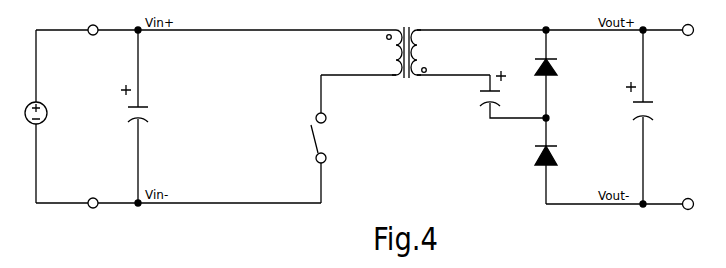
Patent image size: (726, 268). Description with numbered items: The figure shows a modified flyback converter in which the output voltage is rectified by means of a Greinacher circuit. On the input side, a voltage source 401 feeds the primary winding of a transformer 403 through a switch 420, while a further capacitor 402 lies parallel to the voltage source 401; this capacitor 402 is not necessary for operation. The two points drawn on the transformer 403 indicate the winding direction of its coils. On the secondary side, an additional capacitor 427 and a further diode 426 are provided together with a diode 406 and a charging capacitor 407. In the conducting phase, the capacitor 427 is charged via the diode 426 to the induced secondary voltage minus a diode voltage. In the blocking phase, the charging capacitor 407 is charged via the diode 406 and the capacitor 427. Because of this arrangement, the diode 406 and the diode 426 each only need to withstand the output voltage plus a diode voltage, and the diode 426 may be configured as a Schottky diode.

The voltage source 401 is at (46, 121).
The capacitor 402 is at (148, 116).
The transformer 403 is at (407, 63).
The switch 420 is at (331, 139).
The further diode 426 is at (555, 74).
The additional capacitor 427 is at (504, 100).
The diode 406 is at (555, 161).
The charging capacitor 407 is at (649, 117).